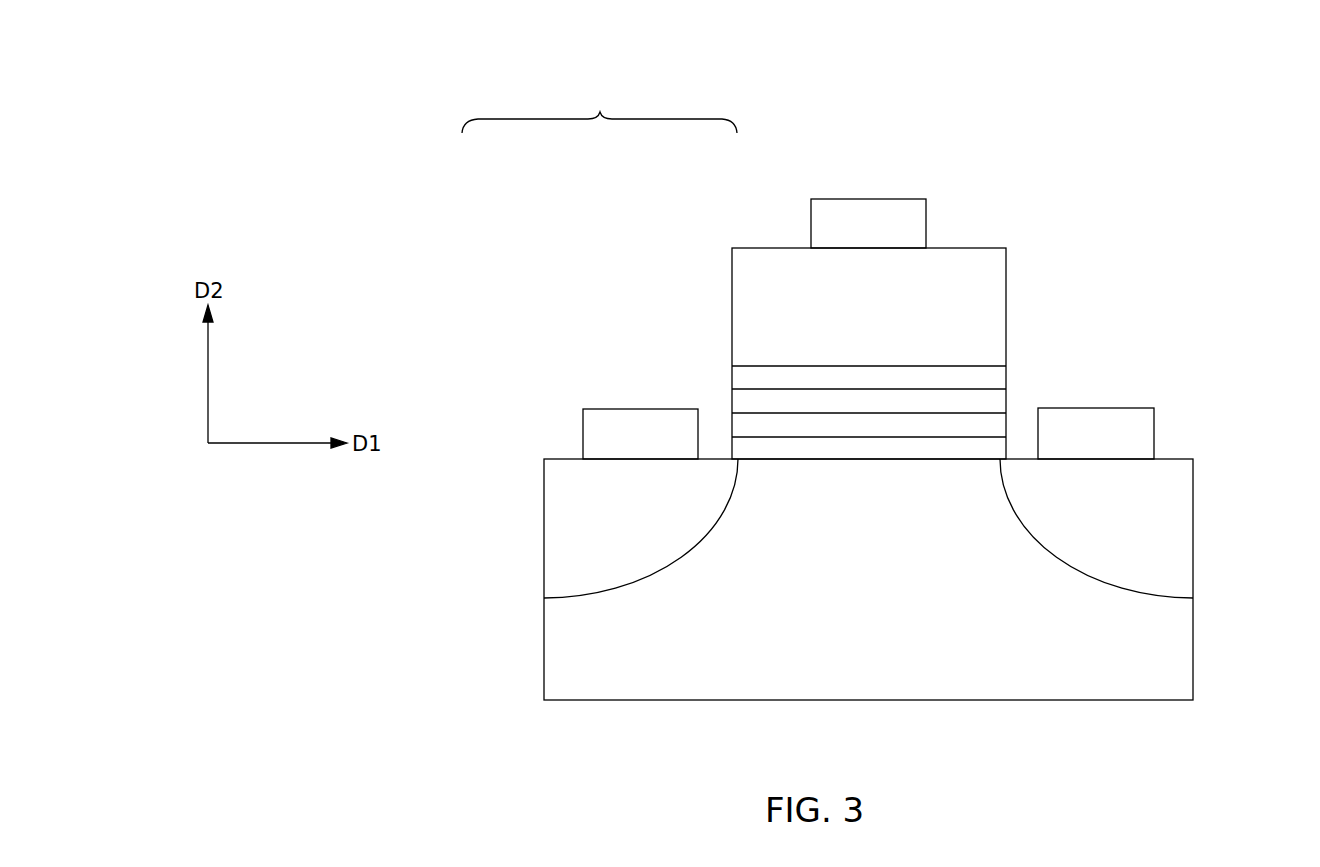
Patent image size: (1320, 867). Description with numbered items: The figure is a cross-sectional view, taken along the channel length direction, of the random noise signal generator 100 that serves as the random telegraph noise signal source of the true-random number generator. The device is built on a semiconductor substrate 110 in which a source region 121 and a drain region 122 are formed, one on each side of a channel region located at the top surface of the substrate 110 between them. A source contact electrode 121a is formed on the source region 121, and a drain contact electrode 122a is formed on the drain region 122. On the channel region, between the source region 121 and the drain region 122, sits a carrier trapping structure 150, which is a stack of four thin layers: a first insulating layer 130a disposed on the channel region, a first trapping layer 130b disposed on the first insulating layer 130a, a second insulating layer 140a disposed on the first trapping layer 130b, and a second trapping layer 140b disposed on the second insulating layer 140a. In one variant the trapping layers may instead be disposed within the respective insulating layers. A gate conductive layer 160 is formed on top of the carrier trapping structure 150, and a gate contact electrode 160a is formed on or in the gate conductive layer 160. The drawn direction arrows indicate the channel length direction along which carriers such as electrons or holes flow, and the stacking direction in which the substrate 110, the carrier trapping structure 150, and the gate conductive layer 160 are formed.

The random noise signal generator 100 is at (346, 68).
The semiconductor substrate 110 is at (867, 700).
The source region 121 is at (544, 540).
The drain region 122 is at (1193, 539).
The source contact electrode 121a is at (583, 432).
The drain contact electrode 122a is at (1154, 432).
The first insulating layer 130a is at (735, 445).
The first trapping layer 130b is at (735, 421).
The second insulating layer 140a is at (735, 397).
The second trapping layer 140b is at (735, 373).
The carrier trapping structure 150 is at (600, 112).
The gate conductive layer 160 is at (1006, 297).
The gate contact electrode 160a is at (926, 222).